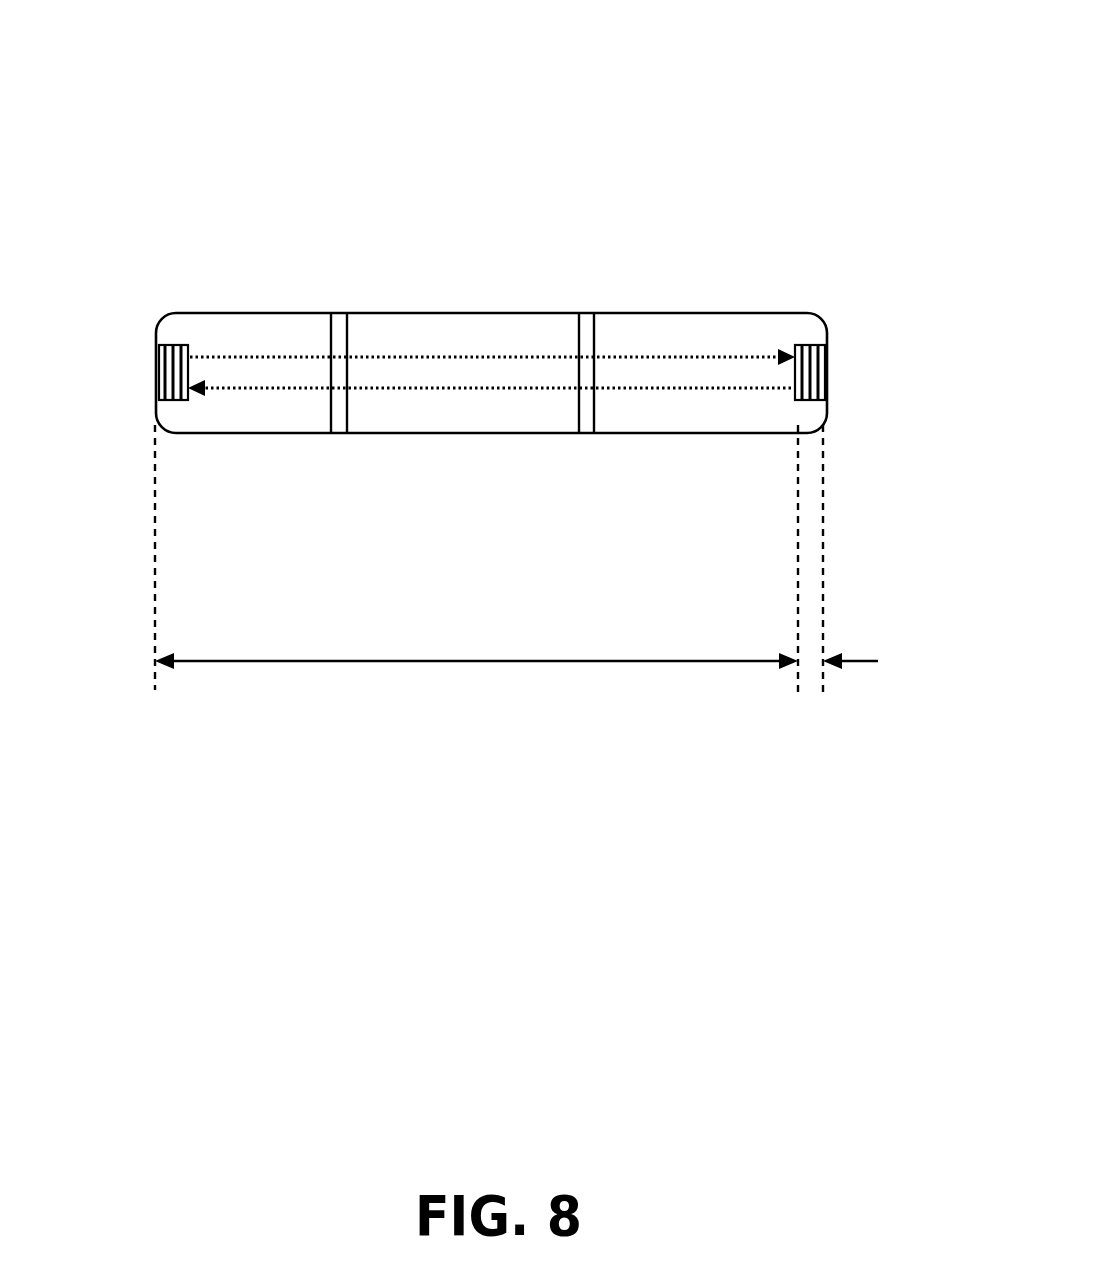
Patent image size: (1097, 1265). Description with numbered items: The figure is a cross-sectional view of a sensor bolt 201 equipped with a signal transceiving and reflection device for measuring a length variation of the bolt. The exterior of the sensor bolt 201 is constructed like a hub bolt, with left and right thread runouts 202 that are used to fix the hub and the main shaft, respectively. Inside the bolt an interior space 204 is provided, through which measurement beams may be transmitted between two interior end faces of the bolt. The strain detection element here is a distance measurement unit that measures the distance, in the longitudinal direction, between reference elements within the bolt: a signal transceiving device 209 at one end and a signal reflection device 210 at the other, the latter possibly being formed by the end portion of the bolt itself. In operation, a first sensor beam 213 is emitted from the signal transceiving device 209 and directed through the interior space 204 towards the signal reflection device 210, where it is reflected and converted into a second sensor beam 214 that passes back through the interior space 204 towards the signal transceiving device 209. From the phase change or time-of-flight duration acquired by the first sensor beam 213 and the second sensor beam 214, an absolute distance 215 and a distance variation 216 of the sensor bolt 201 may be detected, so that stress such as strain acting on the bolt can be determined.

The sensor bolt 201 is at (747, 31).
The thread runouts 202 is at (338, 434).
The interior space 204 is at (552, 327).
The signal transceiving device 209 is at (160, 387).
The signal reflection device 210 is at (823, 387).
The first sensor beam 213 is at (455, 355).
The second sensor beam 214 is at (518, 390).
The absolute distance 215 is at (380, 661).
The distance variation 216 is at (812, 700).